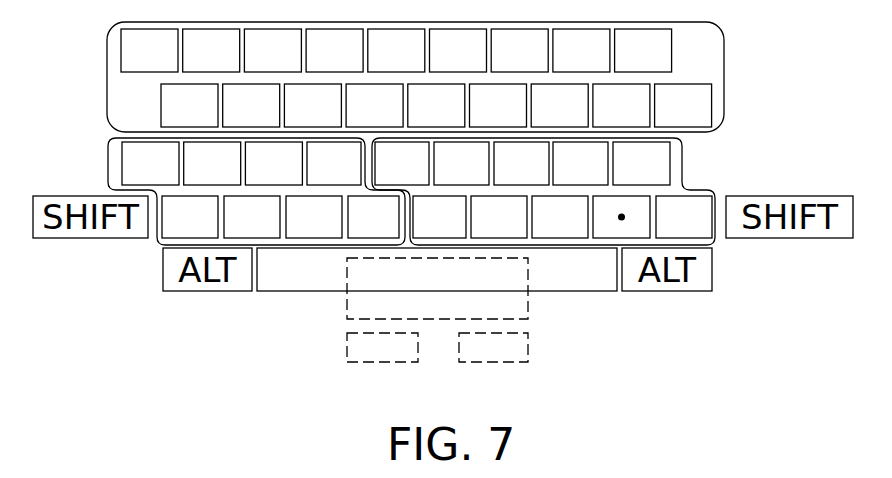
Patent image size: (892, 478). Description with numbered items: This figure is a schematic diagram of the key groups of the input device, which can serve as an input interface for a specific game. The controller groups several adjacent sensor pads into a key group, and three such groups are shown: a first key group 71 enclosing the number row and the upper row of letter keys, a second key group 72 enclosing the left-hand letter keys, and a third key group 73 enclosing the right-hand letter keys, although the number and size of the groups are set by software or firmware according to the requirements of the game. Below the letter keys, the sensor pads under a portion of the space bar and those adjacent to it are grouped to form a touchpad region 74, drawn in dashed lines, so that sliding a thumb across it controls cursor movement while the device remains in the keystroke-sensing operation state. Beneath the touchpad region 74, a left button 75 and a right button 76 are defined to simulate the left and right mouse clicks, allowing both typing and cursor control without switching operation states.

The key group 71 is at (700, 57).
The key group 72 is at (108, 172).
The key group 73 is at (683, 190).
The touchpad region 74 is at (528, 307).
The left button 75 is at (348, 350).
The right button 76 is at (525, 344).